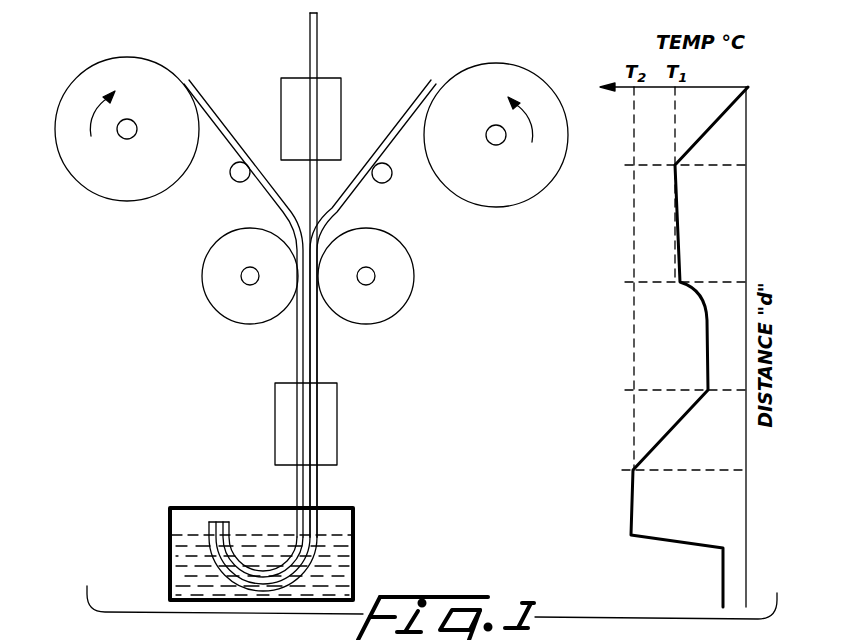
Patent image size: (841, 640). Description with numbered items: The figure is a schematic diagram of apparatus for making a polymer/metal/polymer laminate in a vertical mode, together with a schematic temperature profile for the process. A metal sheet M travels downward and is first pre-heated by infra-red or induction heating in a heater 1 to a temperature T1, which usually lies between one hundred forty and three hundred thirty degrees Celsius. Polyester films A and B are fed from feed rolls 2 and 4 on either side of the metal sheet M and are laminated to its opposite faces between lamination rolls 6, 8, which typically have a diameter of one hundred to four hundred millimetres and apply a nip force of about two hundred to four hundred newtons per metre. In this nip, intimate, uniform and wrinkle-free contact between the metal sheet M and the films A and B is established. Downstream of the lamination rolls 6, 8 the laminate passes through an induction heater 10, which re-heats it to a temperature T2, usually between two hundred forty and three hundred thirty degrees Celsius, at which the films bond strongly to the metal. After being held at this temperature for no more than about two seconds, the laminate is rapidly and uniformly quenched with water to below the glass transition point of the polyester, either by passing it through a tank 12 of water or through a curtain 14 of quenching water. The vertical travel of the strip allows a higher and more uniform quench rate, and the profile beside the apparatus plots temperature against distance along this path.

The heater 1 is at (330, 100).
The feed roll 2 is at (113, 188).
The feed roll 4 is at (506, 194).
The lamination roll 6 is at (218, 298).
The lamination roll 8 is at (404, 290).
The induction heater 10 is at (332, 410).
The tank 12 is at (338, 569).
The curtain 14 is at (290, 503).
The polyester film A is at (211, 113).
The polyester film B is at (400, 133).
The metal sheet M is at (316, 40).